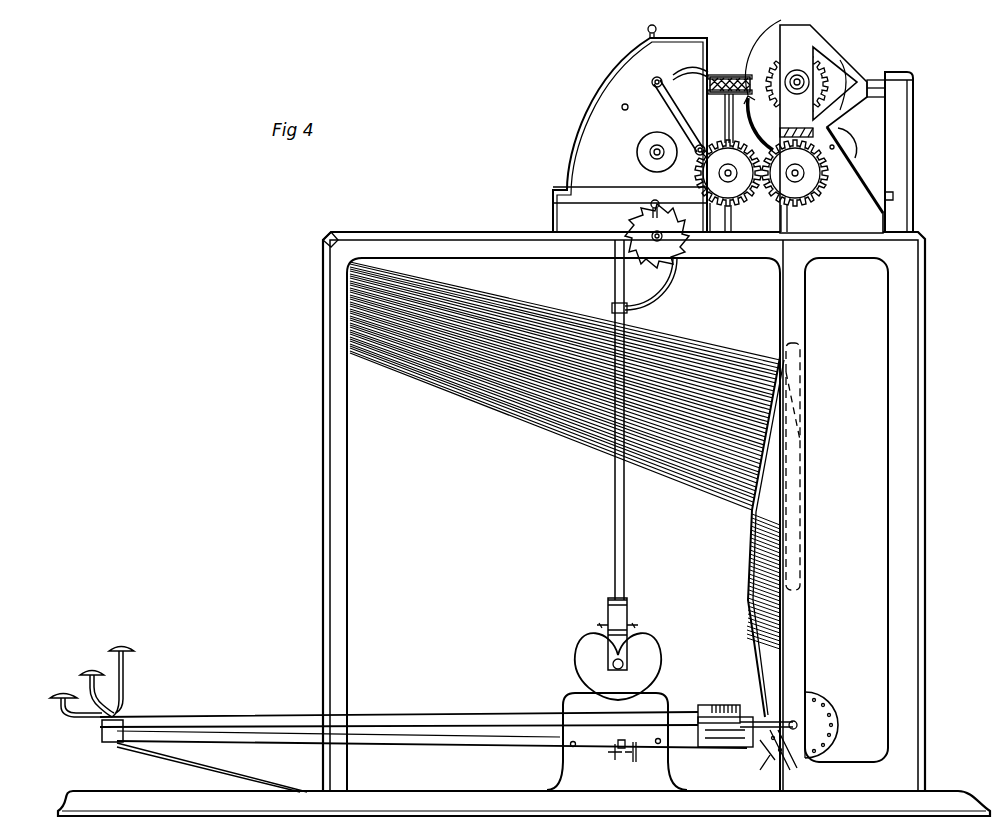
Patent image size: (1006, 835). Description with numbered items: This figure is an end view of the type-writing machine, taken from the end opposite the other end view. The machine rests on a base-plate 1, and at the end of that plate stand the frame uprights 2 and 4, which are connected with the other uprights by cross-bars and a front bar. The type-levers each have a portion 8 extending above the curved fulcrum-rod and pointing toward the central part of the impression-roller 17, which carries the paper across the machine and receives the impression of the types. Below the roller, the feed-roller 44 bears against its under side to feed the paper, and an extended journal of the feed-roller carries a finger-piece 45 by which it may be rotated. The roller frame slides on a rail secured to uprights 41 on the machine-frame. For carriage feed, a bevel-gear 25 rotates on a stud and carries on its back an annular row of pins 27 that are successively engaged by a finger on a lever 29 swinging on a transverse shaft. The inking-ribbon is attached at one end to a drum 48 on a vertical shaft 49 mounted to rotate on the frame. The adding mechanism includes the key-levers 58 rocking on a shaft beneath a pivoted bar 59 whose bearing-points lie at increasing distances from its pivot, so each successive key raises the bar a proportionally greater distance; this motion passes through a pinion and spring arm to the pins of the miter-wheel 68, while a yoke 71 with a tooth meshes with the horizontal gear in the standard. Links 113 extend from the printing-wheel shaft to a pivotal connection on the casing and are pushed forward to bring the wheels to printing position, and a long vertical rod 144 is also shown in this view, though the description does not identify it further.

The base-plate 1 is at (932, 792).
The upright 2 is at (323, 566).
The upright 4 is at (888, 519).
The type-lever portion 8 is at (556, 458).
The impression-roller 17 is at (771, 52).
The bevel-gear 25 is at (830, 716).
The pins 27 is at (836, 712).
The lever 29 is at (677, 738).
The uprights 41 is at (913, 172).
The feed-roller 44 is at (850, 148).
The finger-piece 45 is at (805, 75).
The drum 48 is at (740, 76).
The vertical shaft 49 is at (730, 130).
The key-levers 58 is at (496, 713).
The bar 59 is at (725, 699).
The miter-wheel 68 is at (656, 651).
The yoke 71 is at (606, 752).
The links 113 is at (676, 123).
The rod 144 is at (626, 578).